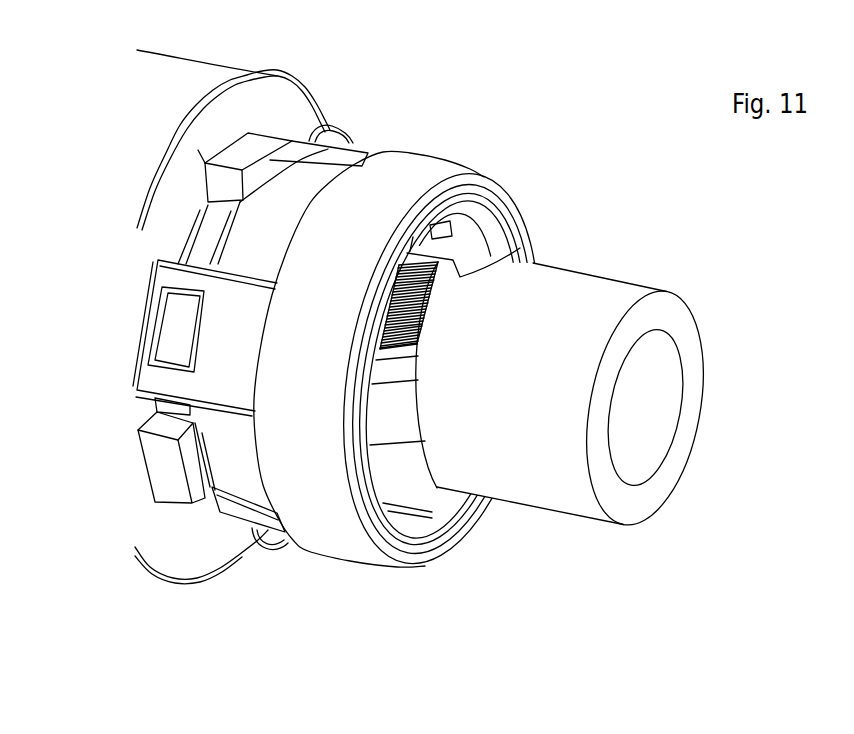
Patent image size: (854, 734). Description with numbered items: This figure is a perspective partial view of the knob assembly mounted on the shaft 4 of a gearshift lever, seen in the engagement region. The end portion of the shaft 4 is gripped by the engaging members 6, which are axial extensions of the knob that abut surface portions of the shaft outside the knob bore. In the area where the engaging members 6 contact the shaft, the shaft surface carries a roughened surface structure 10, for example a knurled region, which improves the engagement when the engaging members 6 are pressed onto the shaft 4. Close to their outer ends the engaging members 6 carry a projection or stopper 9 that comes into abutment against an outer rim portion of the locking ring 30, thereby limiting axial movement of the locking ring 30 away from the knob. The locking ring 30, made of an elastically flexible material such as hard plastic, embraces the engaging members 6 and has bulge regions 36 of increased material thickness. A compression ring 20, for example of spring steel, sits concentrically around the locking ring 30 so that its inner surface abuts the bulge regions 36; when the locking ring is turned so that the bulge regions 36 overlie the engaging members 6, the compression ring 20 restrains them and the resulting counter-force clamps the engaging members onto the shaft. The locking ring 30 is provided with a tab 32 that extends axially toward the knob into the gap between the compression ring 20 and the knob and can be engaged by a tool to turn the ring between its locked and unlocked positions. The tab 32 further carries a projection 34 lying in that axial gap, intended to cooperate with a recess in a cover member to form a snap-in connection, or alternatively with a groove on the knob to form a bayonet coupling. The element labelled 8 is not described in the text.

The shaft 4 is at (687, 337).
The engaging members 6 is at (507, 247).
The latch tab 8 is at (260, 147).
The projection or stopper 9 is at (483, 227).
The roughened surface structure 10 is at (420, 310).
The compression ring 20 is at (333, 557).
The locking ring 30 is at (452, 197).
The tab 32 is at (155, 377).
The projection 34 is at (160, 328).
The bulge regions 36 is at (367, 353).